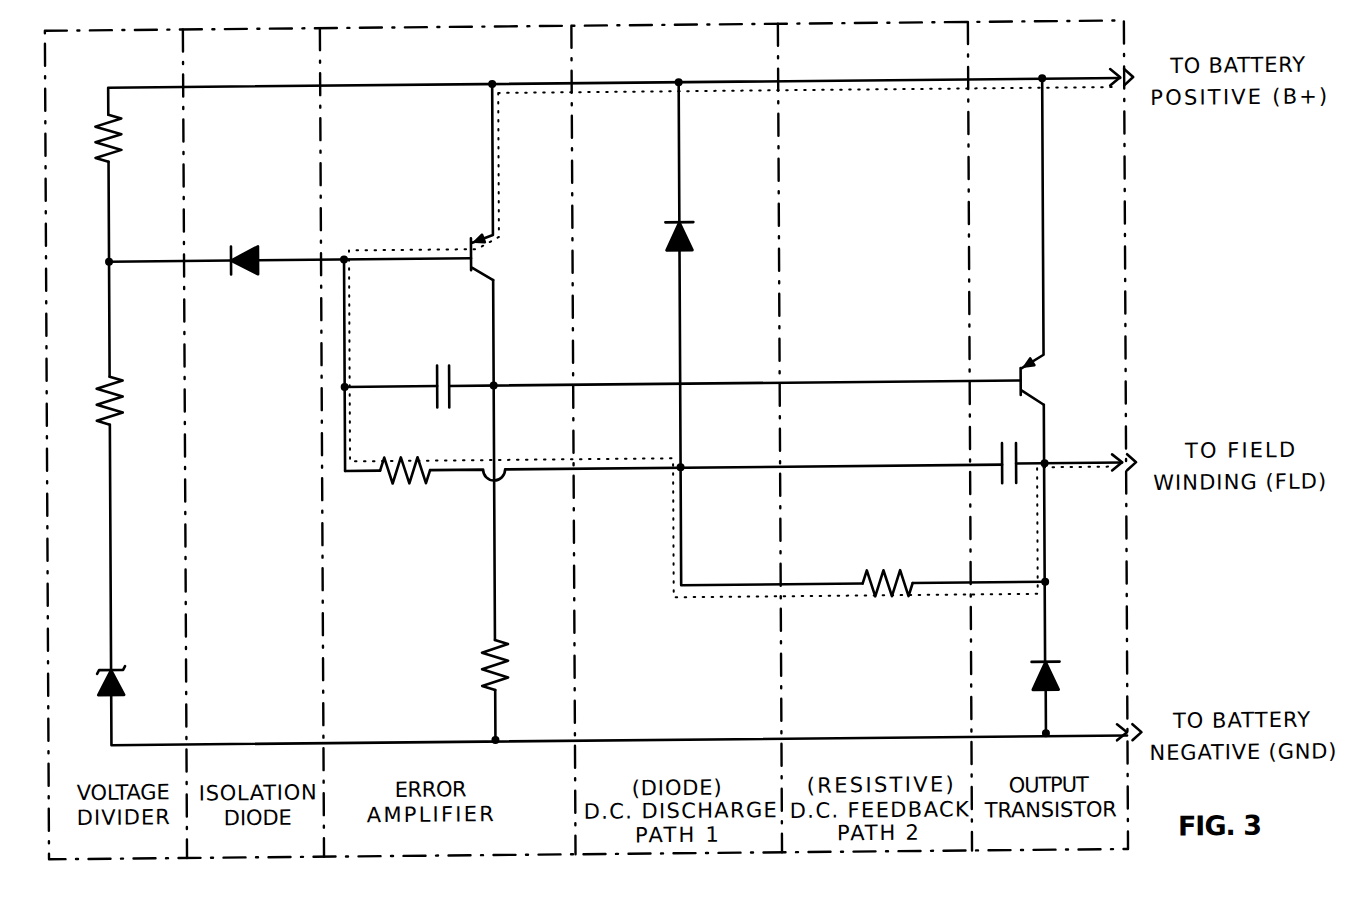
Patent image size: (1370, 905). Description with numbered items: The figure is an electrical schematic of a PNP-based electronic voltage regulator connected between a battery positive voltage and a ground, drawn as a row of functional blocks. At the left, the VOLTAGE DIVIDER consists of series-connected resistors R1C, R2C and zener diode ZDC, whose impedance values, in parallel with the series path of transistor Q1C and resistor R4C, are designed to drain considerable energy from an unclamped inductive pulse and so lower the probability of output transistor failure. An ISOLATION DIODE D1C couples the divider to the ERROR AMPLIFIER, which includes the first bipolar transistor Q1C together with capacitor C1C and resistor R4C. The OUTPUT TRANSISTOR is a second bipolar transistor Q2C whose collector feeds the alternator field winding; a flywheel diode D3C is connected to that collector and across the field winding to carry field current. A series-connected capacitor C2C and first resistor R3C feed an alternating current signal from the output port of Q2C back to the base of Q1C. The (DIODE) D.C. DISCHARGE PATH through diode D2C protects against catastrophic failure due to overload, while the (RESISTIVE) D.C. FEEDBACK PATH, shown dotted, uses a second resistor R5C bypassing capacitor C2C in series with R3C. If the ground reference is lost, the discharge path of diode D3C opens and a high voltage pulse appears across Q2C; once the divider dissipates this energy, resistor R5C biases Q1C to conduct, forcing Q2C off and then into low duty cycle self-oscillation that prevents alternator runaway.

The voltage divider resistor R1C is at (121, 152).
The voltage divider resistor R2C is at (121, 400).
The zener diode ZDC is at (136, 680).
The isolation diode D1C is at (245, 272).
The first bipolar transistor Q1C is at (486, 257).
The error amplifier capacitor C1C is at (452, 400).
The first resistor R3C is at (409, 482).
The error amplifier resistor R4C is at (506, 668).
The discharge path diode D2C is at (691, 239).
The second resistor R5C is at (887, 601).
The second bipolar transistor Q2C is at (1034, 385).
The capacitor C2C is at (1000, 482).
The diode D3C is at (1058, 677).